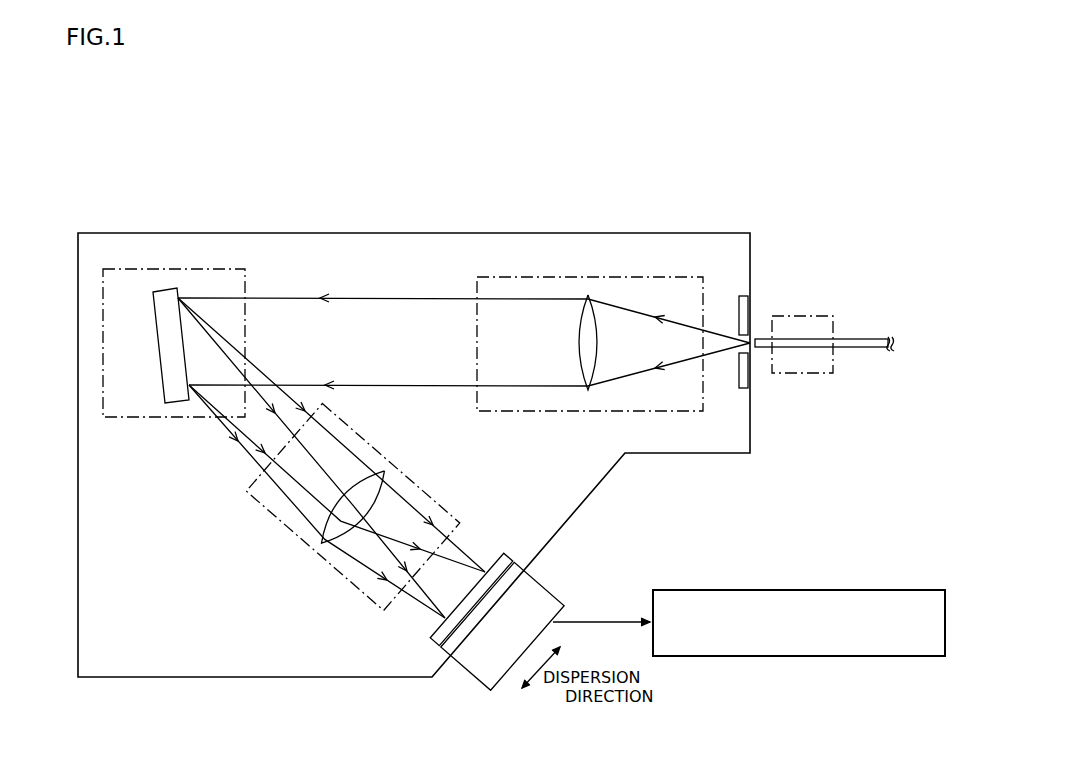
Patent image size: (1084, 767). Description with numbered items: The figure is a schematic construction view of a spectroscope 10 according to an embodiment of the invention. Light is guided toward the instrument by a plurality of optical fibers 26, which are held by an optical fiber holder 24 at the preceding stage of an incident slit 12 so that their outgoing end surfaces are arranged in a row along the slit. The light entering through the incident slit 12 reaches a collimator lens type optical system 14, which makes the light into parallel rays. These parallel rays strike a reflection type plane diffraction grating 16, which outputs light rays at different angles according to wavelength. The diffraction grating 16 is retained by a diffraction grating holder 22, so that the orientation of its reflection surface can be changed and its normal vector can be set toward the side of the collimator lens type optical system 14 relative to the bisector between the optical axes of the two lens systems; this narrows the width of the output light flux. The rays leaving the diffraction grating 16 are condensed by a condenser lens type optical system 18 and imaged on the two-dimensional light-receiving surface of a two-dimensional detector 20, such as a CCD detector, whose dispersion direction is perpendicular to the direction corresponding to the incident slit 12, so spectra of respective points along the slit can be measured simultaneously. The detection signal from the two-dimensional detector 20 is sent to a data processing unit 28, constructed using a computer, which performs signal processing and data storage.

The spectroscope 10 is at (312, 198).
The incident slit 12 is at (737, 330).
The collimator lens type optical system 14 is at (477, 289).
The reflection type plane diffraction grating 16 is at (178, 297).
The condenser lens type optical system 18 is at (278, 521).
The two-dimensional detector 20 is at (506, 553).
The diffraction grating holder 22 is at (117, 418).
The optical fiber holder 24 is at (801, 376).
The optical fibers 26 is at (856, 339).
The data processing unit 28 is at (823, 657).